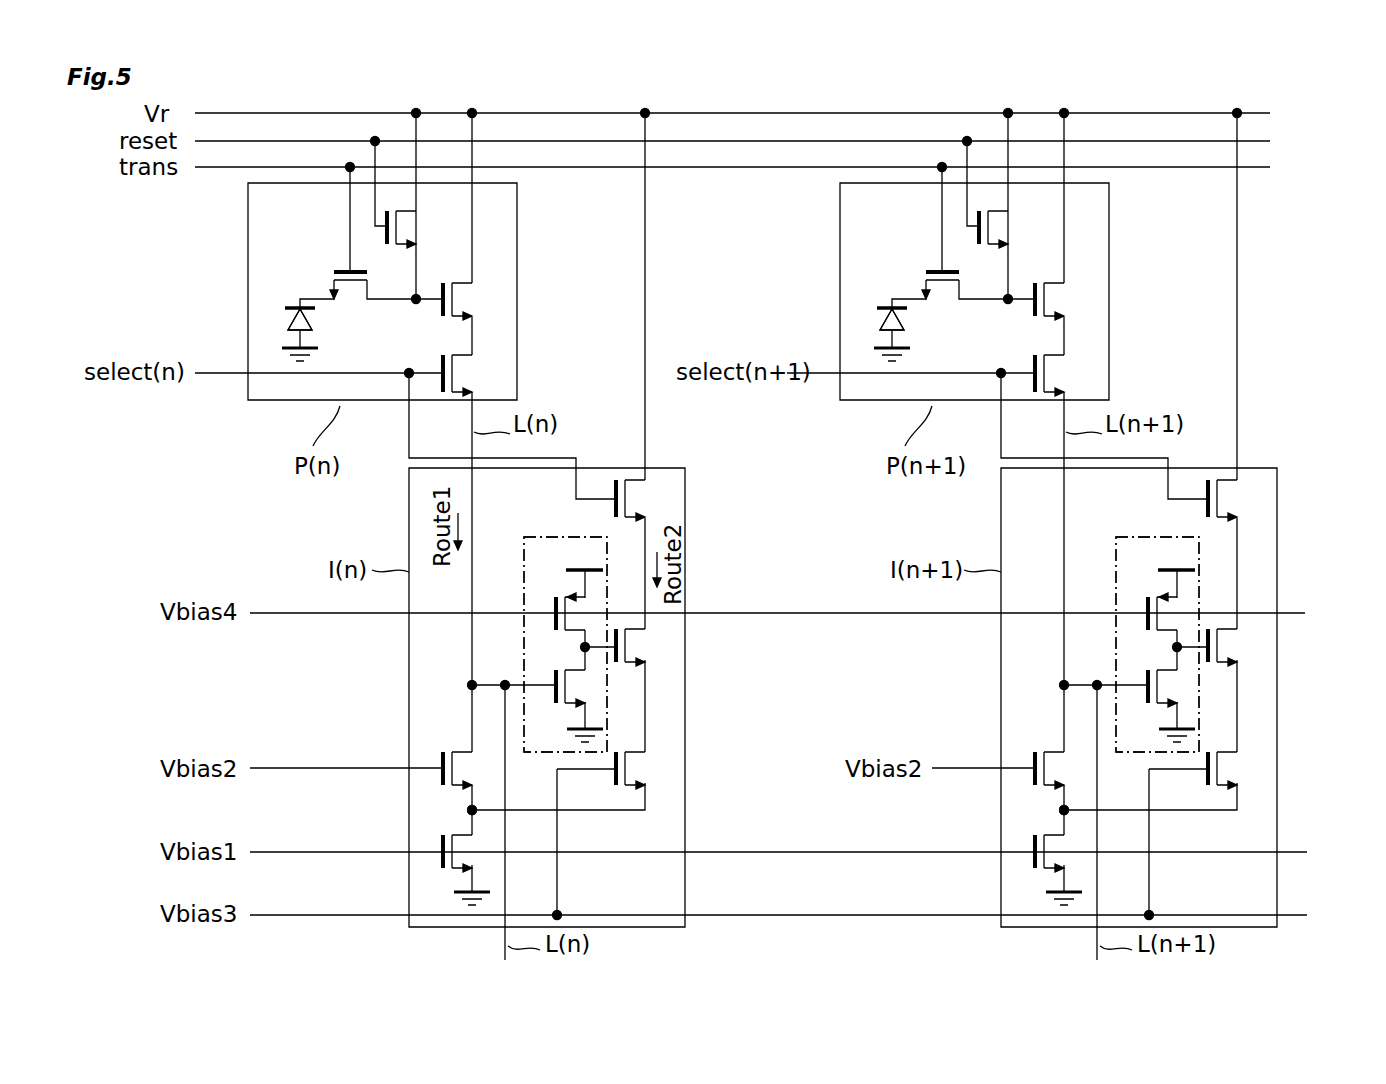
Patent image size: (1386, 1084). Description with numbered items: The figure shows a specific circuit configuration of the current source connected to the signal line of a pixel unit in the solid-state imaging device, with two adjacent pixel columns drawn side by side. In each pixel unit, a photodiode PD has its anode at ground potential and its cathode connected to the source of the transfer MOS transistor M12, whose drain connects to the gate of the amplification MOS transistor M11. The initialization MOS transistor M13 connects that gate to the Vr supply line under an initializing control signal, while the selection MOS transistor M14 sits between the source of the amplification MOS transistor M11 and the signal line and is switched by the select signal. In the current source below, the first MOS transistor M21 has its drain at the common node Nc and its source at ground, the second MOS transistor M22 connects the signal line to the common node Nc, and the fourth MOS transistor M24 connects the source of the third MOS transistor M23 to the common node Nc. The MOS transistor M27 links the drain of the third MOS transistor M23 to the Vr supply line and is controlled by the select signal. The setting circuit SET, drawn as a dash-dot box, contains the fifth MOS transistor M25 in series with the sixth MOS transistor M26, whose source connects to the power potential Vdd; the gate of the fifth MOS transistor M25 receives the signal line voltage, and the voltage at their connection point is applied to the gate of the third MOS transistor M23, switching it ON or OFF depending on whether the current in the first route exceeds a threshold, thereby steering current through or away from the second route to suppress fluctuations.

The amplification MOS transistor M11 is at (463, 283).
The transfer MOS transistor M12 is at (340, 270).
The initialization MOS transistor M13 is at (443, 214).
The selection MOS transistor M14 is at (465, 356).
The photodiode PD is at (316, 318).
The first MOS transistor M21 is at (460, 836).
The second MOS transistor M22 is at (460, 753).
The third MOS transistor M23 is at (626, 664).
The fourth MOS transistor M24 is at (628, 784).
The fifth MOS transistor M25 is at (574, 668).
The sixth MOS transistor M26 is at (570, 632).
The MOS transistor M27 is at (632, 520).
The setting circuit SET is at (525, 580).
The power supply Vdd is at (885, 558).
The common node Nc is at (477, 808).